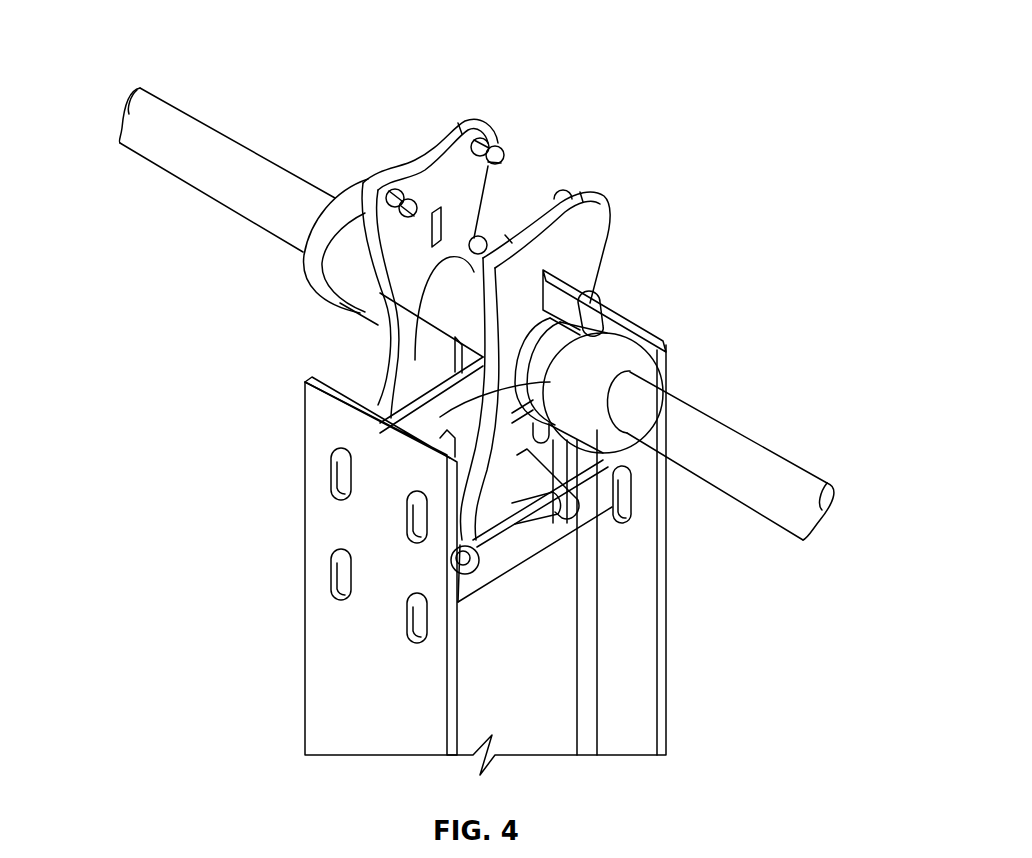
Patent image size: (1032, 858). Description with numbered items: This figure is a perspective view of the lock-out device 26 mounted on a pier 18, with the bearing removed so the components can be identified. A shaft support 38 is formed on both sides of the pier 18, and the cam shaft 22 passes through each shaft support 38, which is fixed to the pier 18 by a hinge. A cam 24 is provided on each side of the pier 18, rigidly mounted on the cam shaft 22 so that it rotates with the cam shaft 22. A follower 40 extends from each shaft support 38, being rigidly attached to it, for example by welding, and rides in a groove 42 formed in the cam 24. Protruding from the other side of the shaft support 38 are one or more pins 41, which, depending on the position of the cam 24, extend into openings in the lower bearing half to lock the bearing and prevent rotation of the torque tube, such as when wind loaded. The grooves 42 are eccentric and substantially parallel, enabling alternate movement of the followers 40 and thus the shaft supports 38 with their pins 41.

The pier 18 is at (327, 682).
The cam shaft 22 is at (722, 428).
The cam 24 is at (350, 202).
The lock-out device 26 is at (468, 118).
The shaft support 38 is at (412, 282).
The follower 40 is at (437, 213).
The pin 41 is at (485, 146).
The groove 42 is at (452, 442).